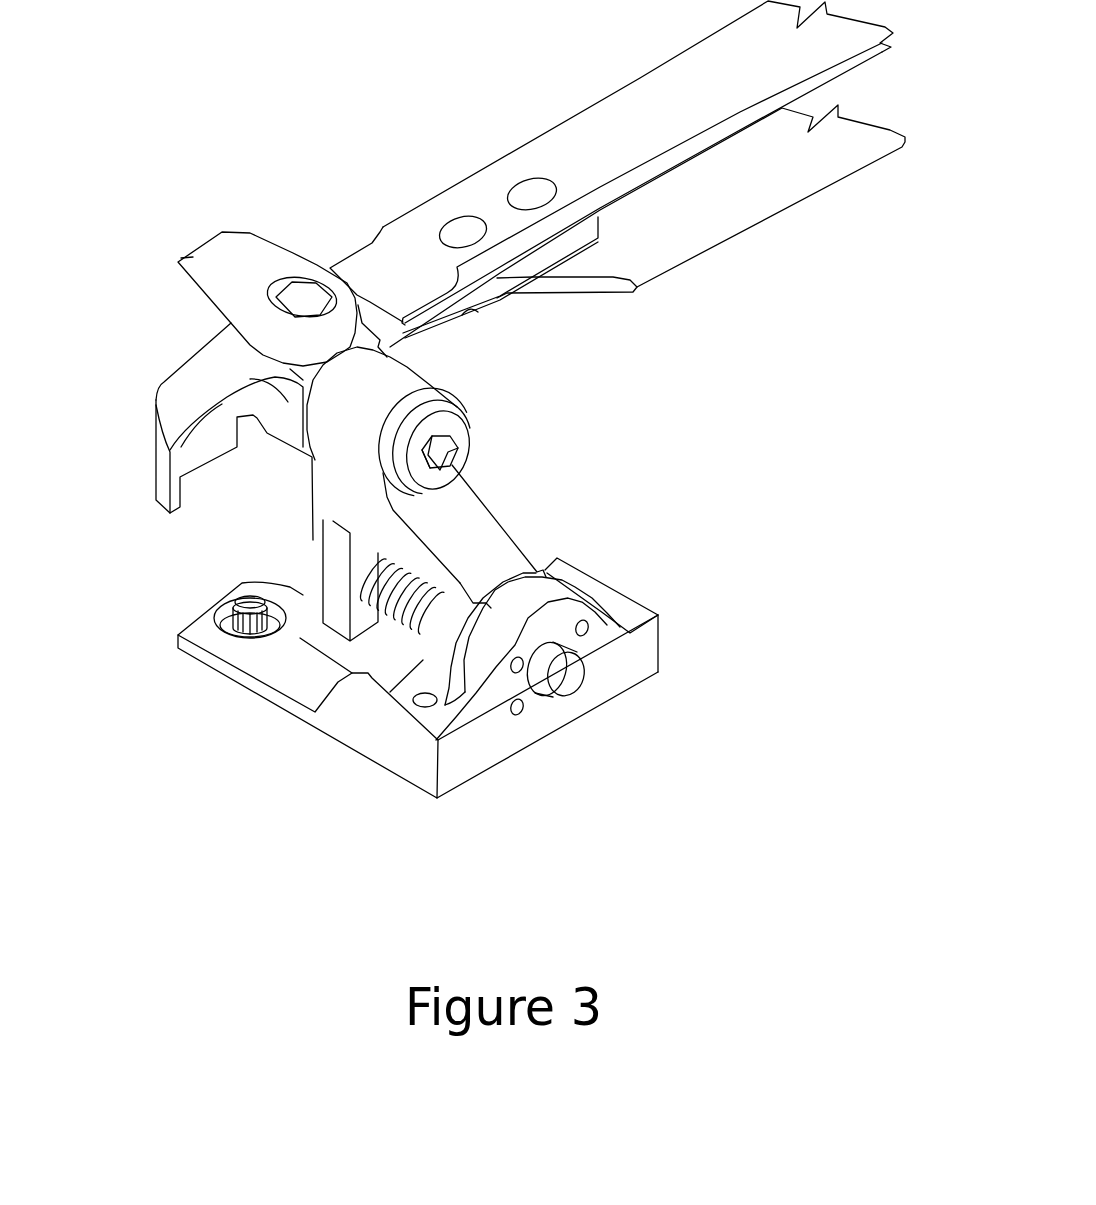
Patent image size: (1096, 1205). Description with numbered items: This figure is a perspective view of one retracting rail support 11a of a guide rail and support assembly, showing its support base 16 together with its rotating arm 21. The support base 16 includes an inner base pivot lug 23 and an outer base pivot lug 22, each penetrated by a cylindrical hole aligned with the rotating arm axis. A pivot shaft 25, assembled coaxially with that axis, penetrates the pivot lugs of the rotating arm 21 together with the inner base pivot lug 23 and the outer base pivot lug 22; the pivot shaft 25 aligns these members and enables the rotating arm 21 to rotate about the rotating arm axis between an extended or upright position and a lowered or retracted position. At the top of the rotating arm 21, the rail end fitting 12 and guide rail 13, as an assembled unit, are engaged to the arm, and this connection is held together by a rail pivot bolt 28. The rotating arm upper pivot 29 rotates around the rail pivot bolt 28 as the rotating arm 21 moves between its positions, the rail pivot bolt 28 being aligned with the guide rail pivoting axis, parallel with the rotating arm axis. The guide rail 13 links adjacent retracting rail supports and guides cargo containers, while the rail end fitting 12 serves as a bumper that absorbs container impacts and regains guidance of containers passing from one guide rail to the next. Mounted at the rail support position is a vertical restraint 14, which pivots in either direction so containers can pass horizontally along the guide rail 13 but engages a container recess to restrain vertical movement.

The retracting rail support 11a is at (567, 725).
The rail end fitting 12 is at (176, 397).
The guide rail 13 is at (627, 137).
The vertical restraint 14 is at (223, 263).
The support base 16 is at (388, 740).
The rotating arm 21 is at (438, 535).
The outer base pivot lug 22 is at (535, 600).
The inner base pivot lug 23 is at (330, 588).
The pivot shaft 25 is at (568, 682).
The rail pivot bolt 28 is at (447, 455).
The rotating arm upper pivot 29 is at (373, 380).